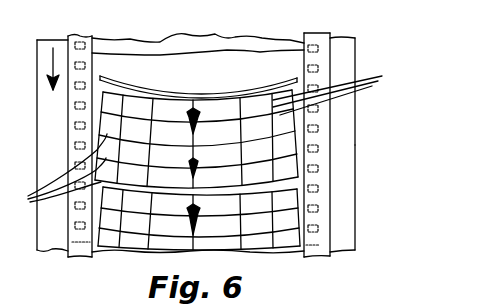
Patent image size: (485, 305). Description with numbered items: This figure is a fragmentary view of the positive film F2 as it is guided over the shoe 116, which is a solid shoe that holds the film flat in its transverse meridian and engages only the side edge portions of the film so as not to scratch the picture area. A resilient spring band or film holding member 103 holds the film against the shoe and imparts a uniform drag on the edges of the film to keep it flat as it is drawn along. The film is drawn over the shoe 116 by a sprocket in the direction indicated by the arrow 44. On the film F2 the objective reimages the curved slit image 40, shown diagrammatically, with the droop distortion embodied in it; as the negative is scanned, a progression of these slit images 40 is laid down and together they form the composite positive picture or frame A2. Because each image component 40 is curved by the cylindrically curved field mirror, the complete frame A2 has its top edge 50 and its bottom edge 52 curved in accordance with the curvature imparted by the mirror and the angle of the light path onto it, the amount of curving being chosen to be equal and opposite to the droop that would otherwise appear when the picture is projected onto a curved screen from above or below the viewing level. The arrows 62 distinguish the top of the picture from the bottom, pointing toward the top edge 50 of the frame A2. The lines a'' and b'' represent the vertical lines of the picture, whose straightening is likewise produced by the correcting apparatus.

The arrow 44 is at (35, 63).
The bottom edge 52 is at (273, 94).
The slit image 40 is at (193, 93).
The resilient spring band or film holding member 103 is at (326, 58).
The vertical lines a'' is at (340, 90).
The composite positive picture or frame A2 is at (305, 143).
The arrows 62 is at (194, 160).
The vertical lines b'' is at (57, 174).
The top edge 50 is at (298, 190).
The shoe 116 is at (357, 230).
The positive film F2 is at (268, 243).